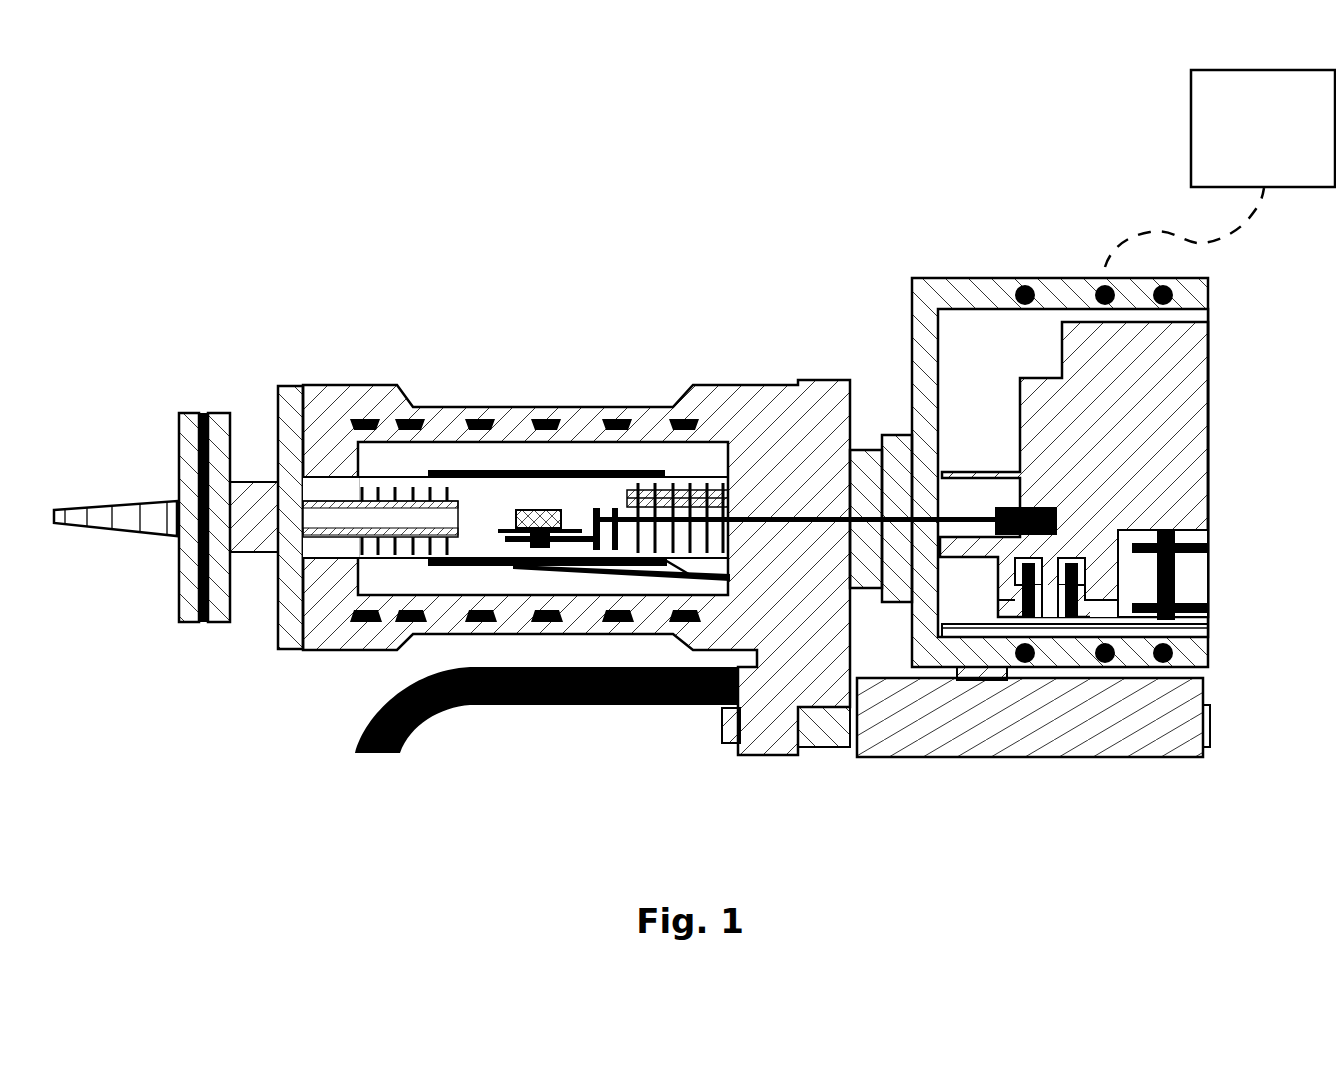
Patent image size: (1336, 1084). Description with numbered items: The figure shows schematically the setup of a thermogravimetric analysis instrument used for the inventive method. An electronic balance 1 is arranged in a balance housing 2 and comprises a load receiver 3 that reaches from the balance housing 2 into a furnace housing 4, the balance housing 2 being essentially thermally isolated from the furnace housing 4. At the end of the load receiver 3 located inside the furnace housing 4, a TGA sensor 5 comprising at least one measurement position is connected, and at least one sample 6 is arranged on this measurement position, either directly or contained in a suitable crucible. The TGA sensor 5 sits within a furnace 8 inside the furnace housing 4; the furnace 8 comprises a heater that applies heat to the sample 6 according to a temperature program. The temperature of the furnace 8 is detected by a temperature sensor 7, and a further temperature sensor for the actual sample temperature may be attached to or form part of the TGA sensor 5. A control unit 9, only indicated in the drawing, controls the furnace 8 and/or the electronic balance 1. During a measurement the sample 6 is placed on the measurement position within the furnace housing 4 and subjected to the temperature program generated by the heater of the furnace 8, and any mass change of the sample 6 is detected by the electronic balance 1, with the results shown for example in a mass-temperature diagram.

The electronic balance 1 is at (1125, 408).
The balance housing 2 is at (1015, 257).
The load receiver 3 is at (808, 517).
The furnace housing 4 is at (330, 363).
The TGA sensor 5 is at (508, 527).
The sample 6 is at (540, 517).
The temperature sensor 7 is at (653, 575).
The furnace 8 is at (595, 470).
The control unit 9 is at (1190, 127).